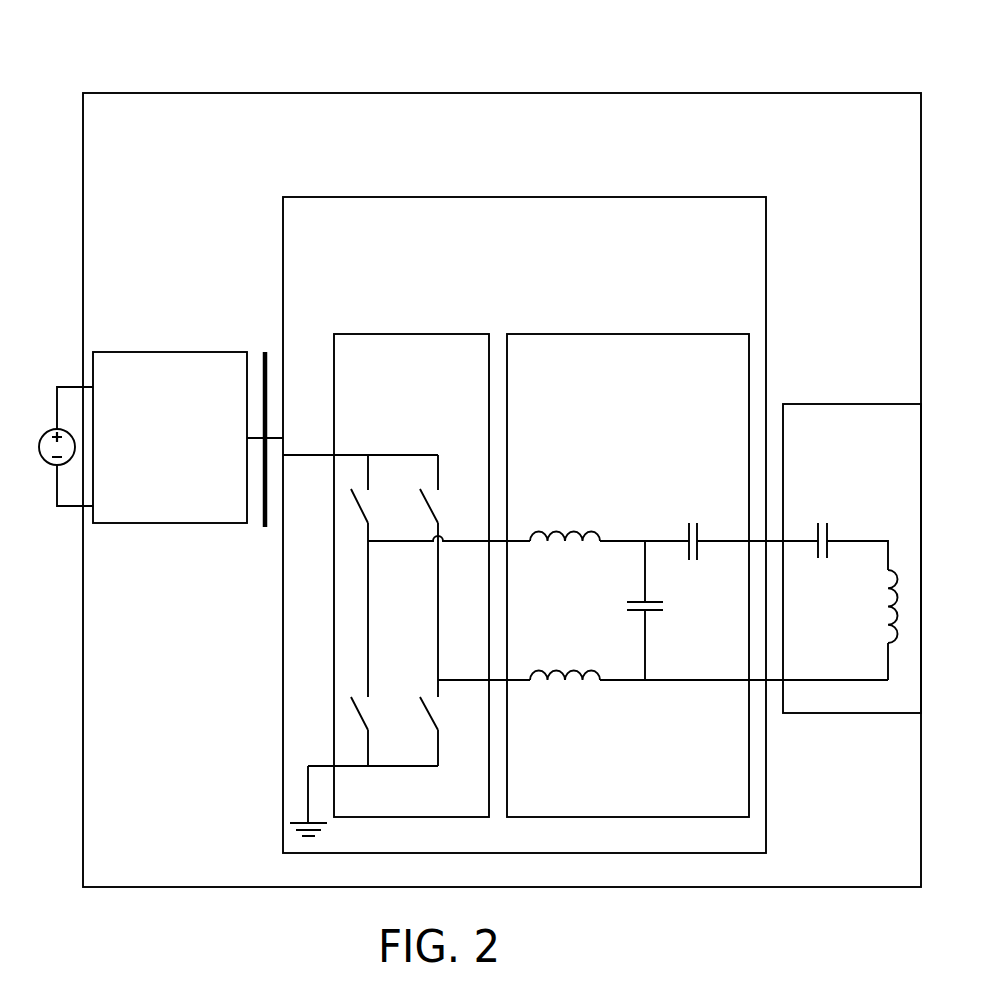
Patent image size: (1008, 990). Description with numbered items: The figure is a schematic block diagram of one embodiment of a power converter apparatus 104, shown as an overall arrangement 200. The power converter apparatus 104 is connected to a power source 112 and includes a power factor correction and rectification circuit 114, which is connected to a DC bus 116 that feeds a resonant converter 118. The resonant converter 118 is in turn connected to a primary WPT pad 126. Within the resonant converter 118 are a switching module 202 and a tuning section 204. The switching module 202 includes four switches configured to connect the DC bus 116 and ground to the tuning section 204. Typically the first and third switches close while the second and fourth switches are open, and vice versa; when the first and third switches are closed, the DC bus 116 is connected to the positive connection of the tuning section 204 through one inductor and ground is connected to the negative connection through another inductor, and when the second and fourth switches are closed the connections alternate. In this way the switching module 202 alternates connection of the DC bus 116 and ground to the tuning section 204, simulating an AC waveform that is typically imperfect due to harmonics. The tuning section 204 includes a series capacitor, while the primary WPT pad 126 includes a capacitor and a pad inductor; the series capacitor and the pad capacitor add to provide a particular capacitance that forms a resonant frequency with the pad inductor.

The power converter system 200 is at (138, 38).
The power converter apparatus 104 is at (483, 152).
The power source 112 is at (49, 446).
The power factor correction and rectification circuit 114 is at (151, 491).
The DC bus 116 is at (264, 528).
The resonant converter 118 is at (506, 256).
The primary WPT pad 126 is at (834, 491).
The switching module 202 is at (394, 421).
The tuning section 204 is at (609, 394).